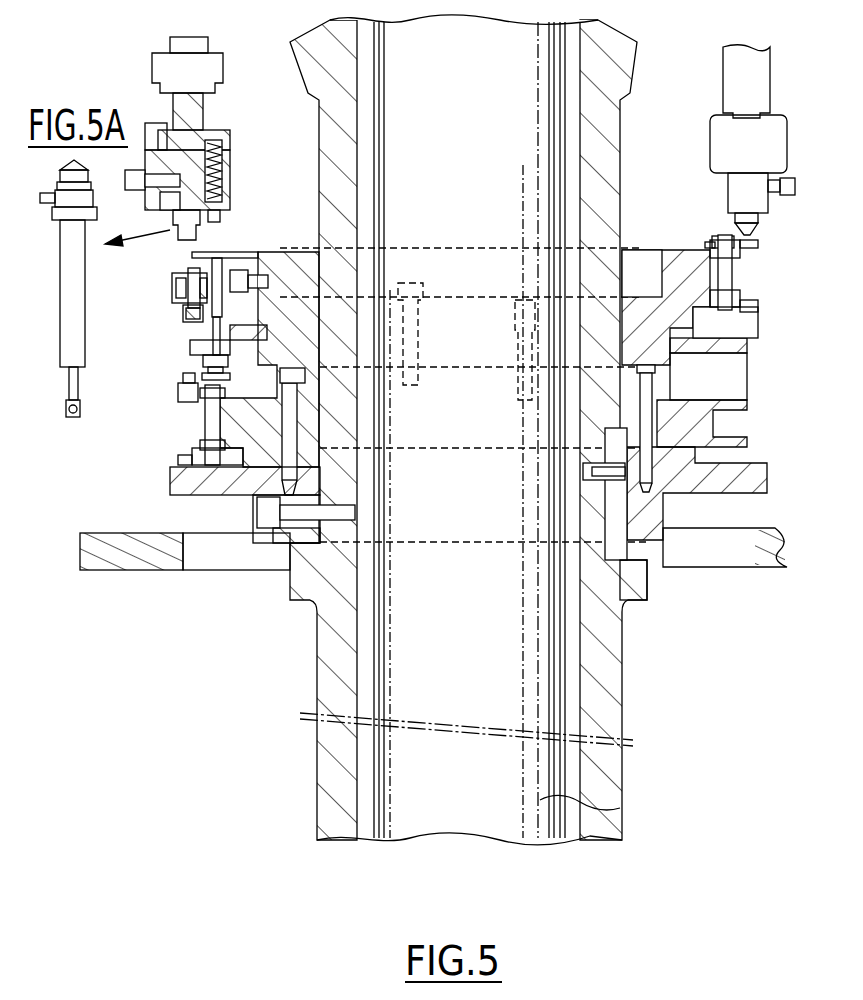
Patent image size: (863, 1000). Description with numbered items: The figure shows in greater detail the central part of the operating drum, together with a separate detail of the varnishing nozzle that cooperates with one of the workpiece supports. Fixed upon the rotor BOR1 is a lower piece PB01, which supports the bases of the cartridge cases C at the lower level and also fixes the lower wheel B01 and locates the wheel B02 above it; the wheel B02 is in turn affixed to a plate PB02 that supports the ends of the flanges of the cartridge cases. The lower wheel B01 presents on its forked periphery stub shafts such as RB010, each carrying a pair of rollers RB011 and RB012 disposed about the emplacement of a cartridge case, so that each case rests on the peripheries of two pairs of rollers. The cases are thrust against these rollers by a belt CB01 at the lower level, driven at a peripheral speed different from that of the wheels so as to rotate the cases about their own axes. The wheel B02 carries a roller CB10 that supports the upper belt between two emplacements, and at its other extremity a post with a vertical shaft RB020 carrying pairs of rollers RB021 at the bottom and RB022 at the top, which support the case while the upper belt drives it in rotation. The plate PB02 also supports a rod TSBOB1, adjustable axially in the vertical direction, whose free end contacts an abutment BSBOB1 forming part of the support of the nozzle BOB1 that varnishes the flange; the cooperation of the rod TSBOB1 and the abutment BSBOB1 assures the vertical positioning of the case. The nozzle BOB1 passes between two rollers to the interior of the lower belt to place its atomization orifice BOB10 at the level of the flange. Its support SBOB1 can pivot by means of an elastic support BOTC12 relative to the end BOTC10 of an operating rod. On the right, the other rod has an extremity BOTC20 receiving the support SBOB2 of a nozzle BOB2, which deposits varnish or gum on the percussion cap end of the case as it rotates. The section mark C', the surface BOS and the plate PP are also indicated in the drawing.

In FIG. 5A, the nozzle BOB1 is at (78, 242).
In FIG. 5, the nozzle BOB1 is at (195, 232).
In FIG. 5A, the atomization nozzle orifice BOB10 is at (80, 410).
In FIG. 5, the rotor BOR1 is at (320, 165).
In FIG. 5, the bore surface BOS is at (620, 808).
In FIG. 5, the rod end BOTC10 is at (196, 110).
In FIG. 5, the elastic support BOTC12 is at (205, 130).
In FIG. 5, the nozzle support SBOB1 is at (222, 160).
In FIG. 5, the abutment BSBOB1 is at (222, 212).
In FIG. 5, the lower wheel B02 is at (291, 258).
In FIG. 5, the roller RB012 is at (218, 382).
In FIG. 5, the rod TSBOB1 is at (195, 330).
In FIG. 5, the roller CB10 is at (178, 308).
In FIG. 5, the belt CB01 is at (180, 435).
In FIG. 5, the stub shaft RB010 is at (207, 443).
In FIG. 5, the section C' is at (132, 451).
In FIG. 5, the roller RB011 is at (228, 470).
In FIG. 5, the lower piece PB01 is at (183, 487).
In FIG. 5, the lower wheel B01 is at (253, 505).
In FIG. 5, the plate PP is at (152, 553).
In FIG. 5, the rod extremity BOTC20 is at (730, 67).
In FIG. 5, the nozzle support SBOB2 is at (728, 185).
In FIG. 5, the nozzle BOB2 is at (733, 220).
In FIG. 5, the roller RB022 is at (718, 245).
In FIG. 5, the vertical shaft RB020 is at (765, 252).
In FIG. 5, the plate PB02 is at (700, 345).
In FIG. 5, the roller RB021 is at (762, 330).
In FIG. 5, the cartridge case C is at (774, 311).